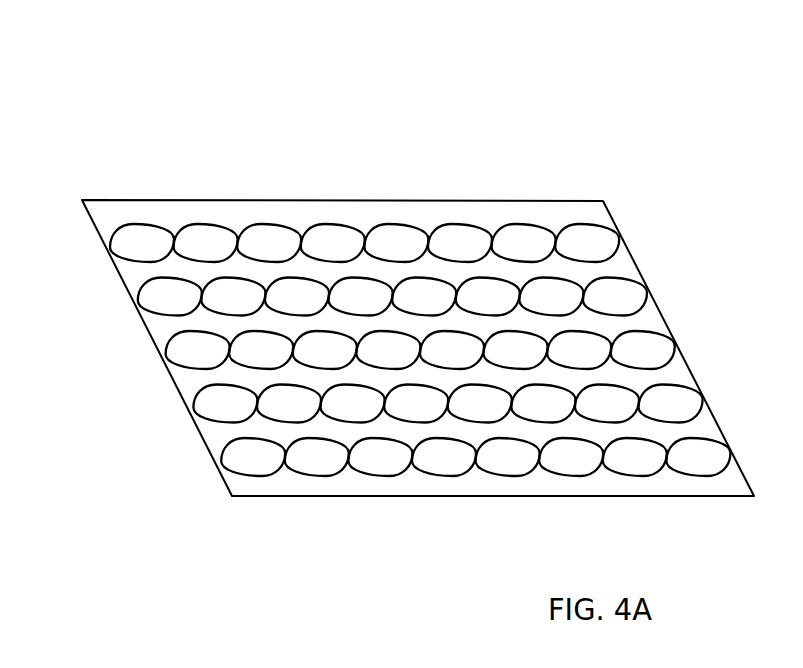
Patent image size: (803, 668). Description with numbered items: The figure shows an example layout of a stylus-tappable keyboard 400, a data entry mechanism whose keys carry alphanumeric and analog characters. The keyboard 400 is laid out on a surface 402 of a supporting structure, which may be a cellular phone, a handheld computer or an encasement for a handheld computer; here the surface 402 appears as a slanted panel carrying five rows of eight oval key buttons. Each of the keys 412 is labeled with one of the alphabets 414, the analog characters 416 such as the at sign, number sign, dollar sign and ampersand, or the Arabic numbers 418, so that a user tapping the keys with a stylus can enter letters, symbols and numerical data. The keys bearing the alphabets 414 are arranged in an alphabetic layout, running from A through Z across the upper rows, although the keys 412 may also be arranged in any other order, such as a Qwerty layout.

The stylus-tappable keyboard 400 is at (106, 166).
The surface 402 is at (622, 270).
The keys 412 is at (126, 238).
The alphabets 414 is at (378, 238).
The analog characters 416 is at (345, 403).
The Arabic numbers 418 is at (378, 466).